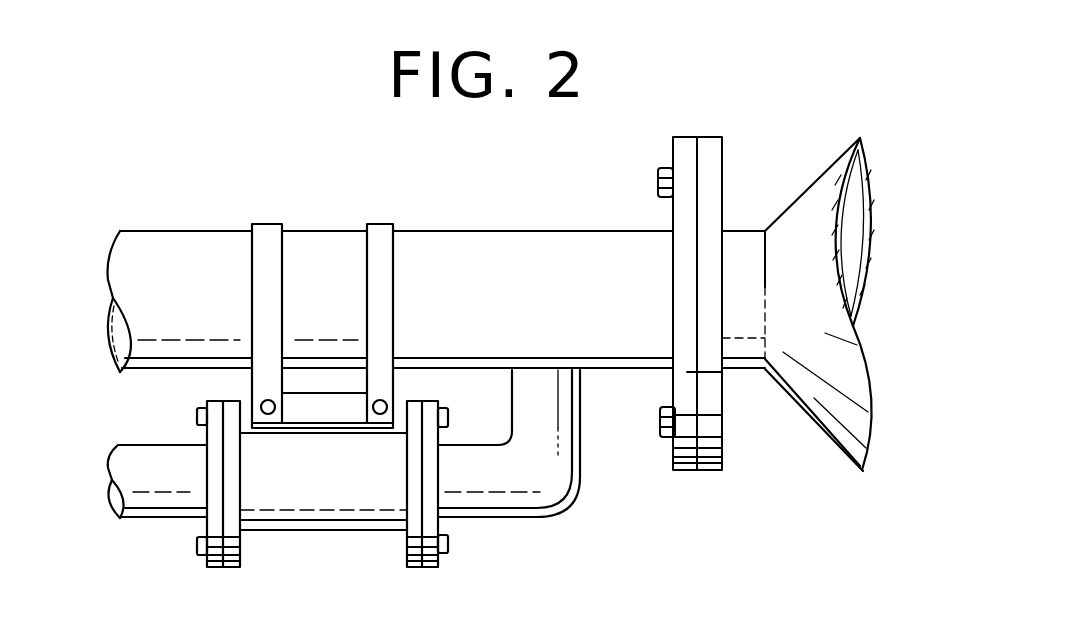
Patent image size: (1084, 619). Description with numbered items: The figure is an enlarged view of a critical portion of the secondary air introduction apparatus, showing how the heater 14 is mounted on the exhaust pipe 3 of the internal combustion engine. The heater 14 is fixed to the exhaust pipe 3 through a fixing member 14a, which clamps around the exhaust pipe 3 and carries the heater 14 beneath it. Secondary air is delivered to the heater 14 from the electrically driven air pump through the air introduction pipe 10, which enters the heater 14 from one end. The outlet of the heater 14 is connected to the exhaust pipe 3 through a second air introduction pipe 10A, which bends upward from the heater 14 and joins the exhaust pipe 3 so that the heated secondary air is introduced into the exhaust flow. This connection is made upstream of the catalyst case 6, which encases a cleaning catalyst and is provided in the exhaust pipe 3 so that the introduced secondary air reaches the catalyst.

The exhaust pipe 3 is at (507, 237).
The catalyst case 6 is at (800, 205).
The fixing member 14a is at (268, 233).
The heater 14 is at (353, 525).
The air introduction pipe 10 is at (150, 515).
The air introduction pipe 10A is at (560, 495).